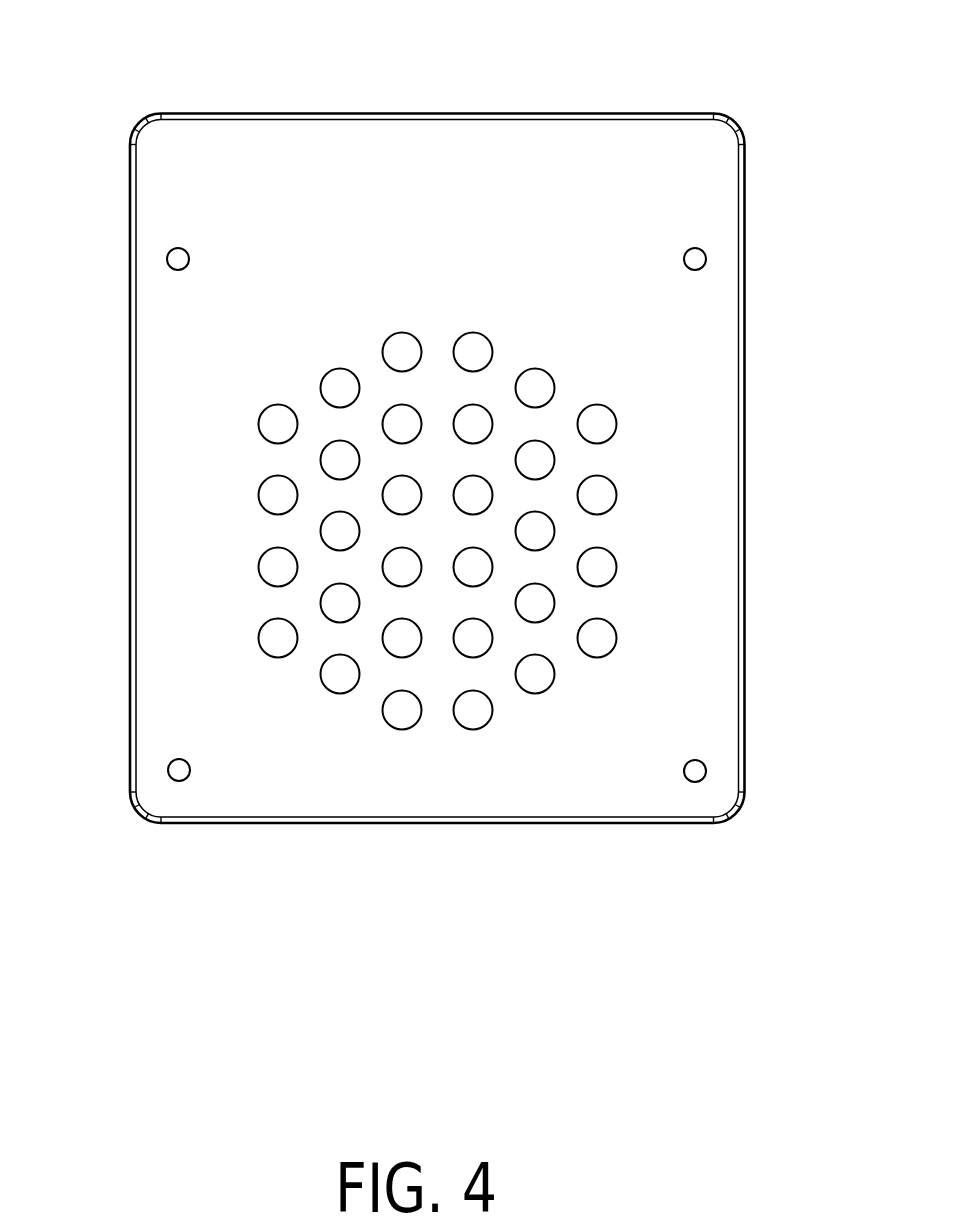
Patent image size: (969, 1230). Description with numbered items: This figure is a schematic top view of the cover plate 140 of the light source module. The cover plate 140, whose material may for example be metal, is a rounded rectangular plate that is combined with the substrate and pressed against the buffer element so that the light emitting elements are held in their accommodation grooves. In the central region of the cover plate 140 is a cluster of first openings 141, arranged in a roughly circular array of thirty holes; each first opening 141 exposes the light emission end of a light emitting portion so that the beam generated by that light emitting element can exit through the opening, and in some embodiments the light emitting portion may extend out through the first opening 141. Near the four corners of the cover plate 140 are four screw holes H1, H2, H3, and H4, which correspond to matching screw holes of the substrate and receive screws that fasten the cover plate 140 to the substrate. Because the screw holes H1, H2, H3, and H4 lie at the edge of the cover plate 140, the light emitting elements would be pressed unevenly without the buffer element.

The cover plate 140 is at (112, 47).
The first openings 141 is at (599, 501).
The screw hole H1 is at (706, 258).
The screw hole H2 is at (706, 770).
The screw hole H3 is at (167, 771).
The screw hole H4 is at (165, 259).